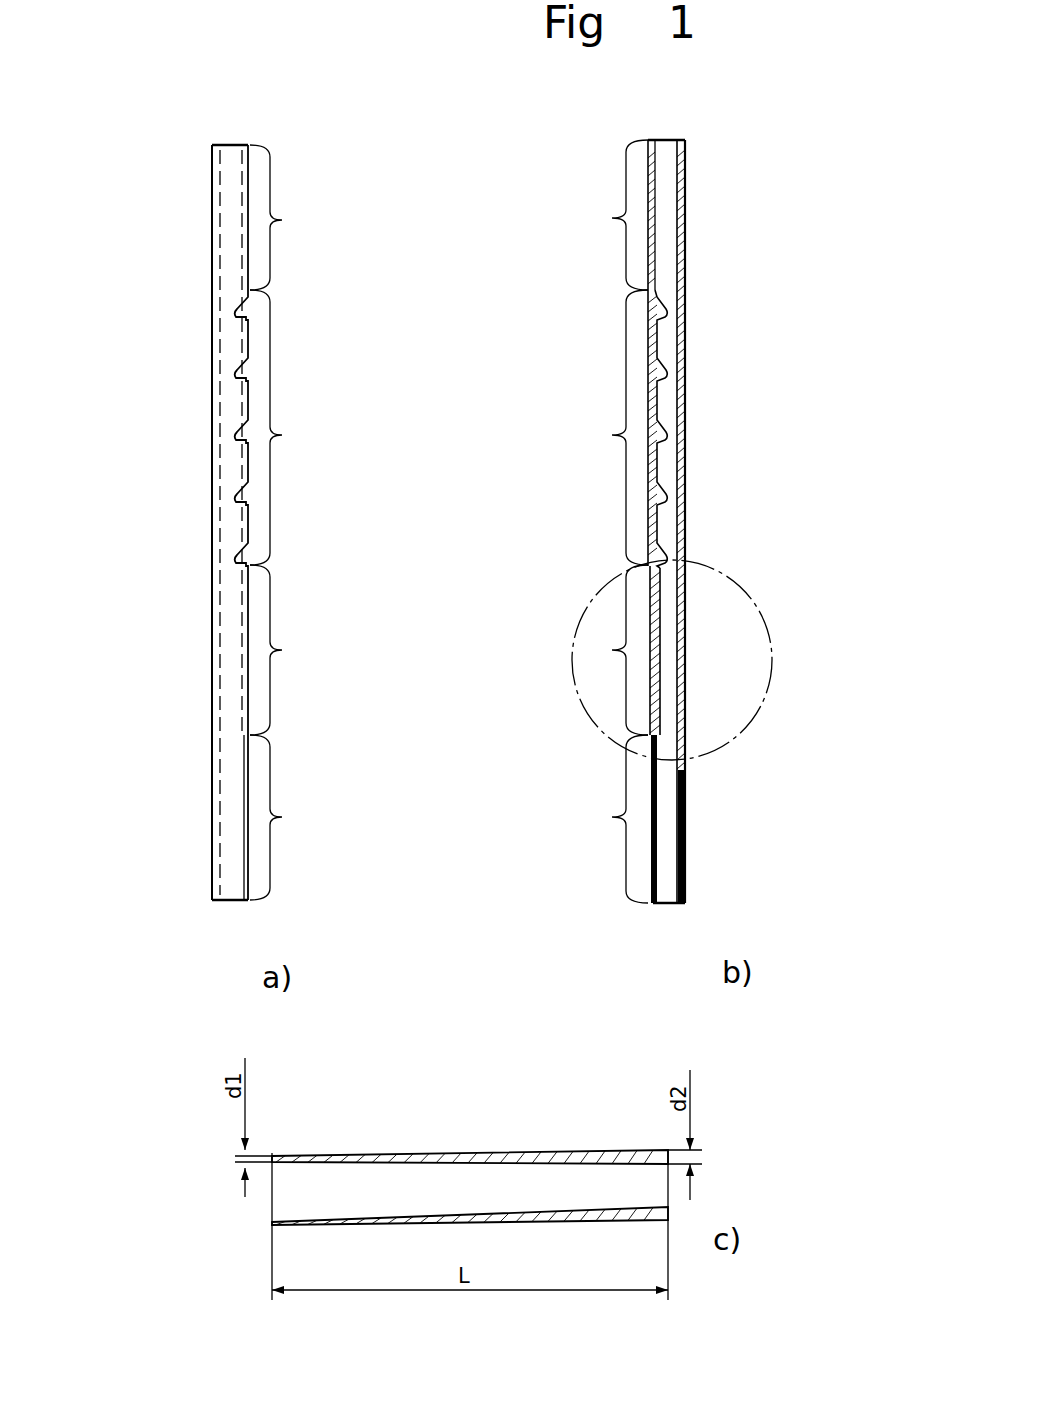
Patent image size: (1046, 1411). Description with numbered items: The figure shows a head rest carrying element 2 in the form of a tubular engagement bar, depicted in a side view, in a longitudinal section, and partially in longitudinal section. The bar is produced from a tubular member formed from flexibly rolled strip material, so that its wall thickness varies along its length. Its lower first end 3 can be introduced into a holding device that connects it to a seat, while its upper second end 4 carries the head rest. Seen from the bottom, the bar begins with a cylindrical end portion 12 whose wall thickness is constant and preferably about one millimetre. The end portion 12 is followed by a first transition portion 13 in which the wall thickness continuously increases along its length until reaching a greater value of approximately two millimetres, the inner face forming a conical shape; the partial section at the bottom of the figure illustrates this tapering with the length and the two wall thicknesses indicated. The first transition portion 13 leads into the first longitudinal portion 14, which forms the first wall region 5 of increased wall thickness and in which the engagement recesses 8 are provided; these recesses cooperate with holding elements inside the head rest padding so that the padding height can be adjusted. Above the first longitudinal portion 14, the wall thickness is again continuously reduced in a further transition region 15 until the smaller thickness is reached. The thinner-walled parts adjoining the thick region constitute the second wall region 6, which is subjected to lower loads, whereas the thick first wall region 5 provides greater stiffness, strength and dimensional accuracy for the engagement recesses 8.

The head rest carrying element 2 is at (183, 100).
The lower first end 3 is at (210, 904).
The upper second end 4 is at (210, 195).
The first wall region 5 is at (690, 406).
The second wall region 6 is at (690, 773).
The engagement recesses 8 is at (241, 377).
The cylindrical end portion 12 is at (282, 817).
The first transition portion 13 is at (282, 650).
The first longitudinal portion 14 is at (282, 435).
The further transition region 15 is at (282, 220).